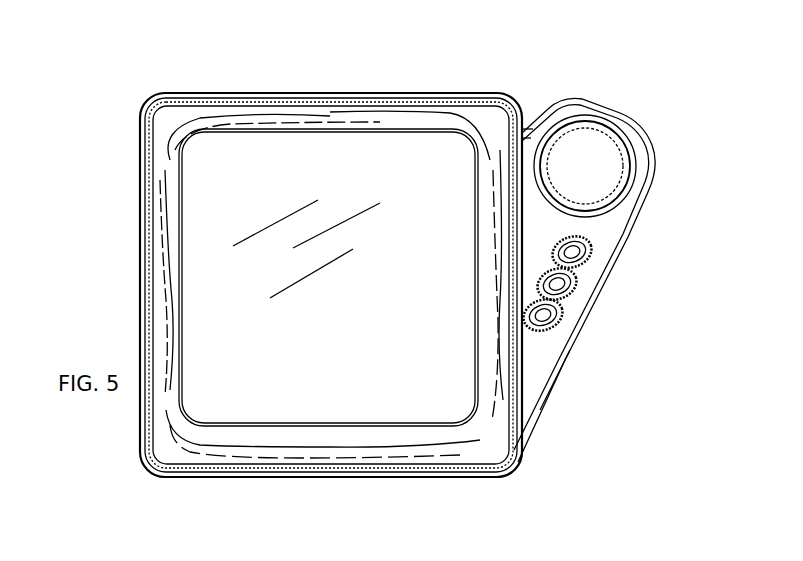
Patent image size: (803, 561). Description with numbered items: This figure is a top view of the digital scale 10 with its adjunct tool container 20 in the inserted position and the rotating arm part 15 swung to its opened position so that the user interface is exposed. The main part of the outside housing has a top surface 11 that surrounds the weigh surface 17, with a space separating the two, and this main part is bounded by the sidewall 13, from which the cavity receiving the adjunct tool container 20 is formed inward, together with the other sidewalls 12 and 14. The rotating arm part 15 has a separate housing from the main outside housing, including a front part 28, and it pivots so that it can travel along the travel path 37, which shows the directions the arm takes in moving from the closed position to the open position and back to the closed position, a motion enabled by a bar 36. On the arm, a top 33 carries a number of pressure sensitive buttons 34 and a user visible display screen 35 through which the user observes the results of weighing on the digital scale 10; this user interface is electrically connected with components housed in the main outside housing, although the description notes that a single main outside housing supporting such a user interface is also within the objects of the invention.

The digital scale 10 is at (420, 62).
The top surface 11 is at (160, 437).
The sidewall 12 is at (248, 477).
The sidewall 13 is at (140, 160).
The sidewall 14 is at (332, 92).
The rotating arm part 15 is at (543, 407).
The weigh surface 17 is at (252, 405).
The adjunct tool container 20 is at (138, 302).
The front part 28 is at (500, 475).
The top 33 is at (558, 354).
The control buttons 34 is at (589, 258).
The user visible display screen 35 is at (583, 183).
The bar 36 is at (528, 125).
The travel path 37 is at (645, 190).